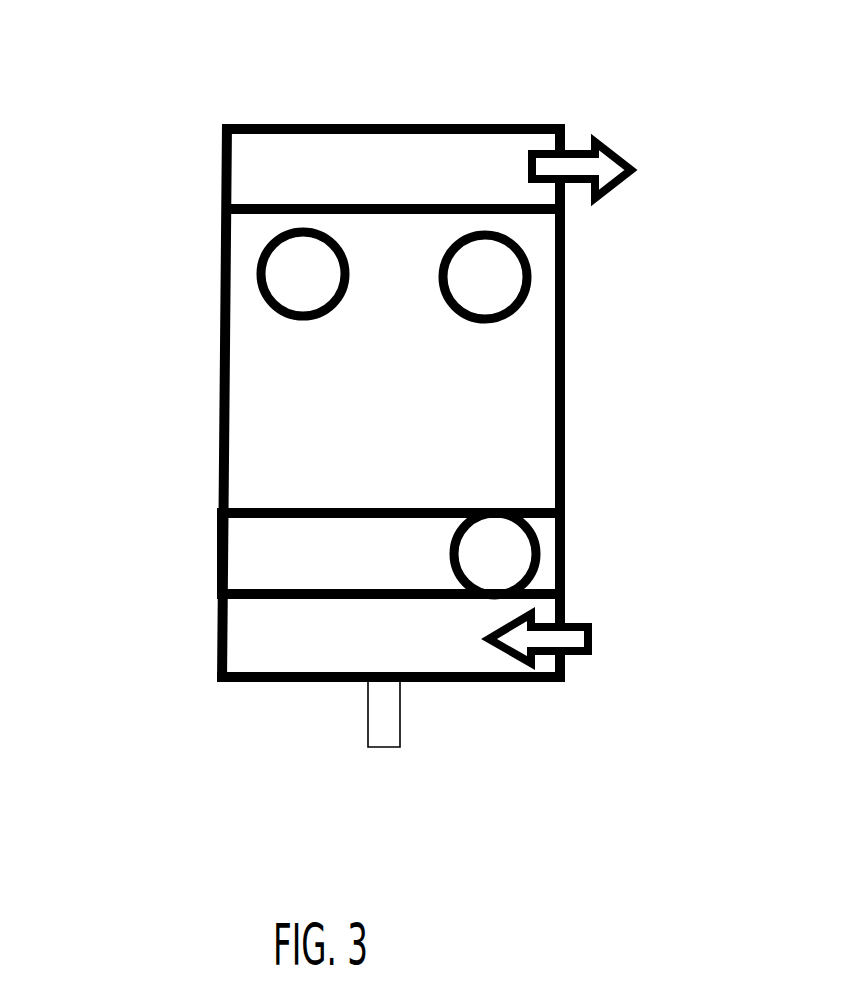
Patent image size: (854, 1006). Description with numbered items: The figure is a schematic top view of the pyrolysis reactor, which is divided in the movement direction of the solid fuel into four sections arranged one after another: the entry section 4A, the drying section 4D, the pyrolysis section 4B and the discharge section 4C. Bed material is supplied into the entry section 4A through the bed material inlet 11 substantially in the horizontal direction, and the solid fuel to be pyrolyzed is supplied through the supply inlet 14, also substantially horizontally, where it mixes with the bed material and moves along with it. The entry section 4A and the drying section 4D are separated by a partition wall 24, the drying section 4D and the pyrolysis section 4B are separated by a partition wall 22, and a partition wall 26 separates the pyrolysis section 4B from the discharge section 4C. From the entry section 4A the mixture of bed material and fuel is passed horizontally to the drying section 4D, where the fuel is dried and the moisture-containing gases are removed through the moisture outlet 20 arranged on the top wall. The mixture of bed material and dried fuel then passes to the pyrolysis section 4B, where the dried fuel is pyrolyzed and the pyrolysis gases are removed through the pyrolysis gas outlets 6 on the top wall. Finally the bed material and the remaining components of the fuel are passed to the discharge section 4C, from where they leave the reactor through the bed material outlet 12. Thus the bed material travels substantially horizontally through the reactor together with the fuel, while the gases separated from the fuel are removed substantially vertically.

The entry section 4A is at (262, 647).
The pyrolysis section 4B is at (533, 337).
The discharge section 4C is at (298, 148).
The drying section 4D is at (243, 562).
The pyrolysis gas outlets 6 is at (282, 275).
The bed material inlet 11 is at (565, 640).
The bed material outlet 12 is at (603, 163).
The supply inlet 14 is at (378, 717).
The moisture outlet 20 is at (522, 555).
The partition wall 22 is at (290, 508).
The partition wall 24 is at (403, 598).
The partition wall 26 is at (422, 205).